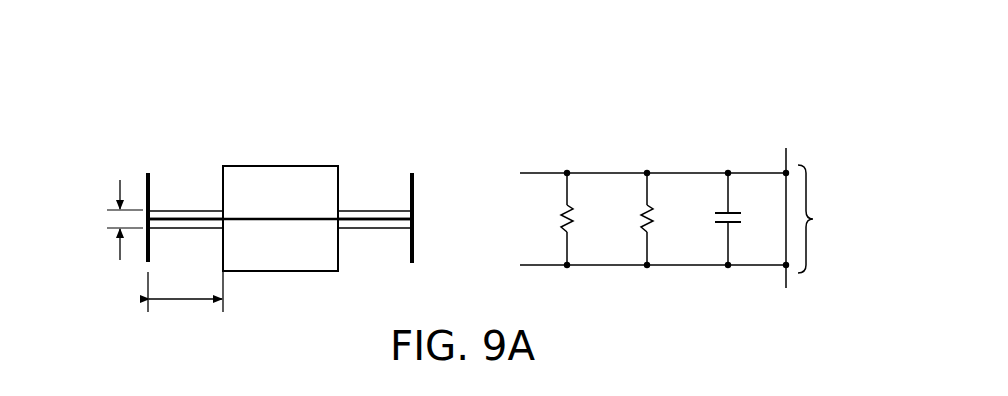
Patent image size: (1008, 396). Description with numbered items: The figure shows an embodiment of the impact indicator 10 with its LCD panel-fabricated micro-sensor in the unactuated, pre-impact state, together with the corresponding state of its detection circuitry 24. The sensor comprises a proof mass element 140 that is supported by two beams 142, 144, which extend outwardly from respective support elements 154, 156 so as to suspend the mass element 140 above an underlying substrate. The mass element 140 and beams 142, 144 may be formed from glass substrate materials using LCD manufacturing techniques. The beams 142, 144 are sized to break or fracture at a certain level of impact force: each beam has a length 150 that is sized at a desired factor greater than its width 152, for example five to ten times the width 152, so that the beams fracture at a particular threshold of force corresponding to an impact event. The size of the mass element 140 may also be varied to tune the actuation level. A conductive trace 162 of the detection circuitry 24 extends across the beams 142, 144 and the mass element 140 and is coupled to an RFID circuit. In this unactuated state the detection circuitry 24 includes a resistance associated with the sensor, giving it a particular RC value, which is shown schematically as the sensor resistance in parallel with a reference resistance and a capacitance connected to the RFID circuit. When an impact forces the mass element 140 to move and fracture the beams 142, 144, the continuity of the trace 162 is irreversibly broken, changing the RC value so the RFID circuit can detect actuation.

The impact indicator 10 is at (192, 120).
The detection circuitry 24 is at (735, 138).
The proof mass element 140 is at (281, 166).
The beam 142 is at (370, 230).
The beam 144 is at (188, 229).
The length 150 is at (186, 302).
The width 152 is at (118, 254).
The support element 154 is at (414, 245).
The support element 156 is at (145, 183).
The conductive trace 162 is at (197, 213).